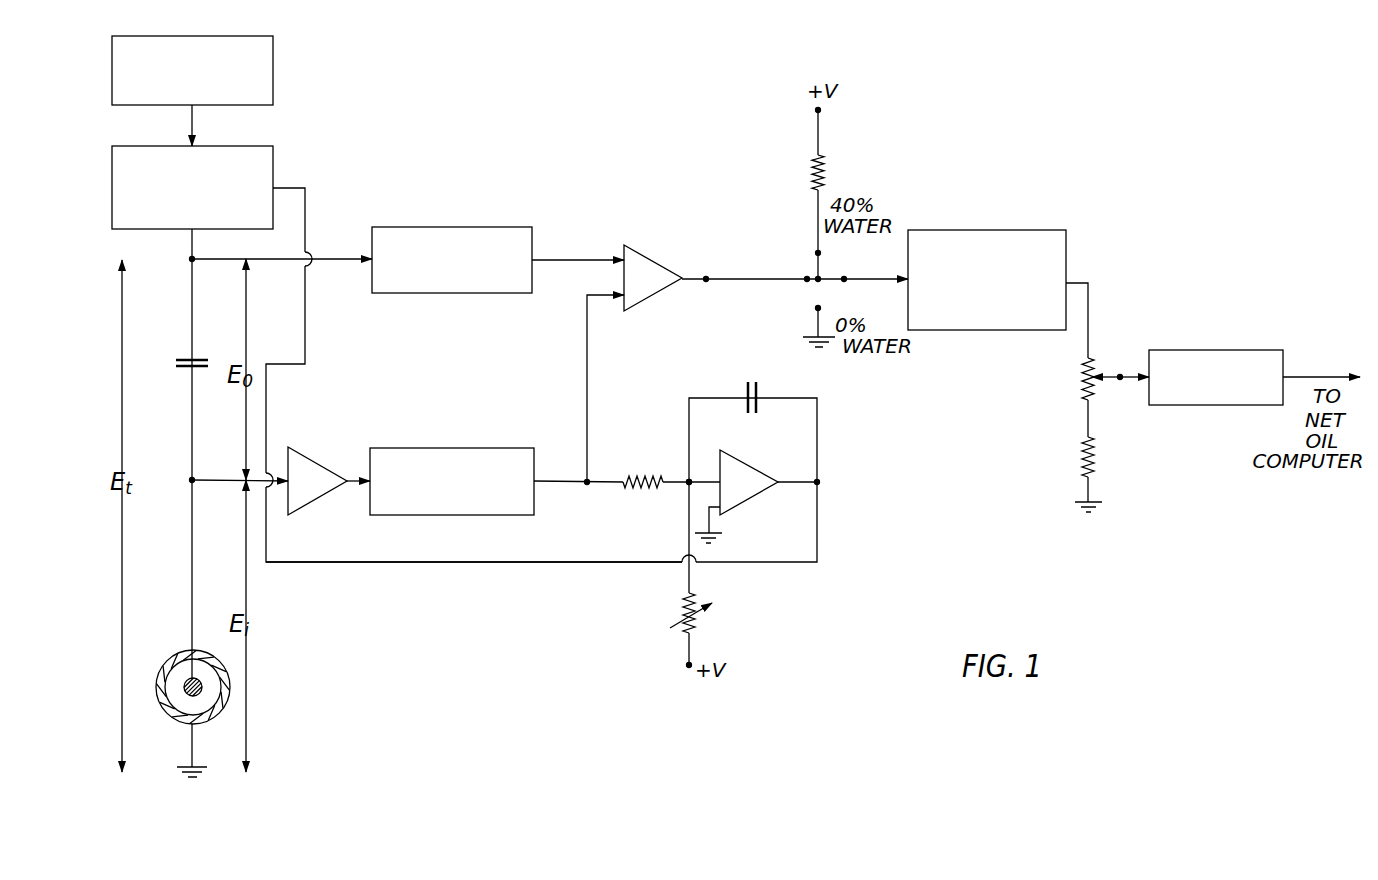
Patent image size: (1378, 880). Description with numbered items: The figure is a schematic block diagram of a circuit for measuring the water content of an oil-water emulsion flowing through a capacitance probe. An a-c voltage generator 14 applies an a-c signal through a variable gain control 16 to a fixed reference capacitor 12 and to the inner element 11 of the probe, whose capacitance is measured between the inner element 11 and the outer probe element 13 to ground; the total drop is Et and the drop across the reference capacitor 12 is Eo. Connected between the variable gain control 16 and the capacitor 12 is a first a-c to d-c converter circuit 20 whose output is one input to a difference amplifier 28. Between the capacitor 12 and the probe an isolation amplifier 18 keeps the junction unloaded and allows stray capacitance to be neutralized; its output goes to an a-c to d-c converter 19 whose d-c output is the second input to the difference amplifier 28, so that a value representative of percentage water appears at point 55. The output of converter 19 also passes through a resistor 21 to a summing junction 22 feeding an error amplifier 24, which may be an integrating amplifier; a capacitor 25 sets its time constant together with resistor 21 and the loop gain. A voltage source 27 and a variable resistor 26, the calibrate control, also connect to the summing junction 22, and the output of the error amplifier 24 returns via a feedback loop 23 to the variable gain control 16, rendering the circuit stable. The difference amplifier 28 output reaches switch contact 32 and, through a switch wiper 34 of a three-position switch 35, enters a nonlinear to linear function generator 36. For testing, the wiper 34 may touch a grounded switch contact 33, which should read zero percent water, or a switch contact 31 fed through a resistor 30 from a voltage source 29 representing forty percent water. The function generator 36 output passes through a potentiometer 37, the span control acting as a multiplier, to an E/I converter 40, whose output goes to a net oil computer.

The inner element 11 is at (185, 676).
The capacitor 12 is at (197, 358).
The outer probe element 13 is at (170, 714).
The a-c voltage generator 14 is at (275, 63).
The variable gain control 16 is at (275, 163).
The isolation amplifier 18 is at (318, 462).
The a-c to d-c converter 19 is at (457, 447).
The a-c to d-c converter circuit 20 is at (460, 225).
The resistor 21 is at (632, 492).
The summing junction 22 is at (688, 478).
The feedback loop 23 is at (467, 563).
The error amplifier 24 is at (752, 502).
The capacitor 25 is at (757, 403).
The variable resistor 26 is at (705, 623).
The voltage source 27 is at (687, 667).
The difference amplifier 28 is at (650, 255).
The voltage source 29 is at (815, 110).
The resistor 30 is at (830, 165).
The switch contact 31 is at (815, 253).
The switch contact 32 is at (806, 277).
The switch contact 33 is at (813, 310).
The switch wiper 34 is at (828, 283).
The switch 35 is at (828, 273).
The nonlinear to linear function generator 36 is at (1002, 227).
The potentiometer 37 is at (1083, 378).
The E/I converter 40 is at (1257, 348).
The point 55 is at (706, 282).